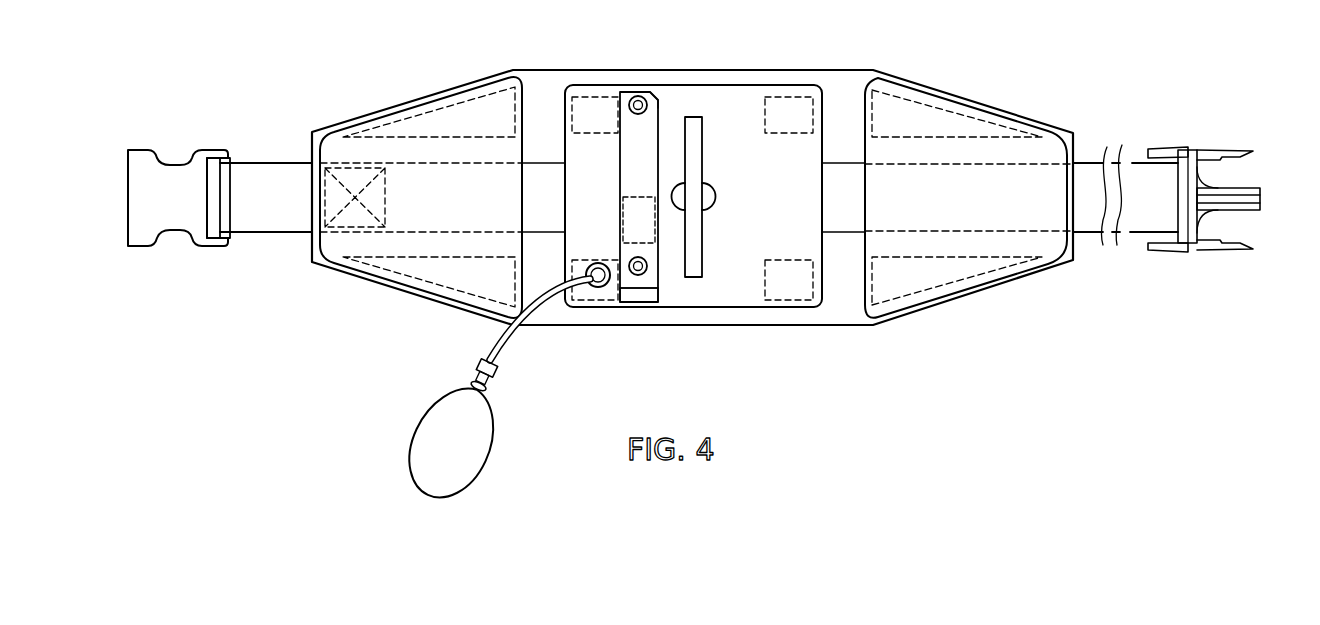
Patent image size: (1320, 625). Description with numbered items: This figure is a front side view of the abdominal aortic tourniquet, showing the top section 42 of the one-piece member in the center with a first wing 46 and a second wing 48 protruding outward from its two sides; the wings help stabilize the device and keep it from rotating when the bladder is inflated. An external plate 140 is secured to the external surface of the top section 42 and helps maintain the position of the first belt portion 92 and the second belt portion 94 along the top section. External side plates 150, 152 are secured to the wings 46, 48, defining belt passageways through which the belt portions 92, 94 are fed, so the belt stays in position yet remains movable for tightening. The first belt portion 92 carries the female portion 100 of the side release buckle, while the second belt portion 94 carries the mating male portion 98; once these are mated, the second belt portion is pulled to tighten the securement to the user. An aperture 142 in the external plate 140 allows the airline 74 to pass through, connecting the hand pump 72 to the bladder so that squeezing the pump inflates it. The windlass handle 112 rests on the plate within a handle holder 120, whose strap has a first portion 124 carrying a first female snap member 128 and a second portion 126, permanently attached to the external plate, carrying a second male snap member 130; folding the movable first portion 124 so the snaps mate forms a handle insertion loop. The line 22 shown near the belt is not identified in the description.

The belt body 22 is at (541, 185).
The top section 42 is at (788, 85).
The first wing 46 is at (412, 100).
The second wing 48 is at (1003, 110).
The hand pump 72 is at (477, 453).
The airline 74 is at (507, 338).
The first belt portion 92 is at (266, 176).
The second belt portion 94 is at (1135, 178).
The male portion 98 is at (1248, 125).
The female portion 100 is at (178, 128).
The handle 112 is at (693, 157).
The handle holder 120 is at (637, 177).
The first portion 124 is at (660, 112).
The second portion 126 is at (660, 268).
The first female snap member 128 is at (637, 96).
The second male snap member 130 is at (639, 280).
The external plate 140 is at (763, 285).
The aperture 142 is at (603, 288).
The external side plate 150 is at (423, 282).
The external side plate 152 is at (912, 297).